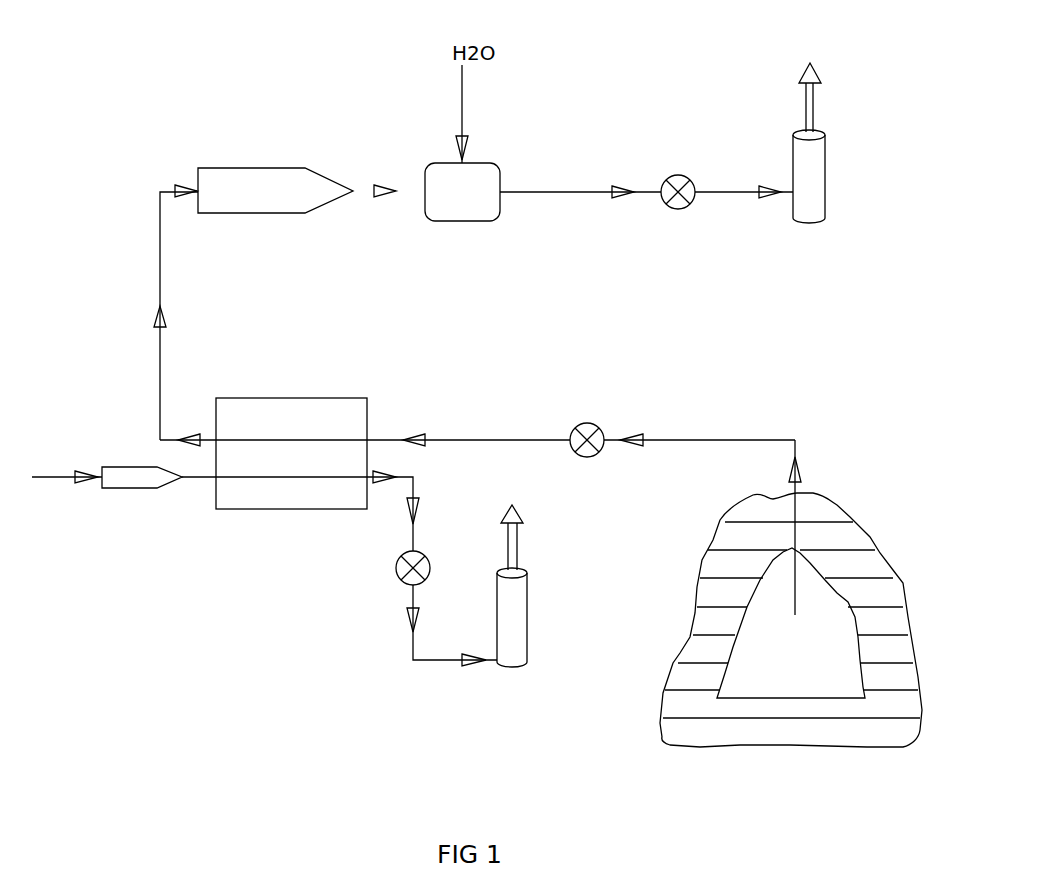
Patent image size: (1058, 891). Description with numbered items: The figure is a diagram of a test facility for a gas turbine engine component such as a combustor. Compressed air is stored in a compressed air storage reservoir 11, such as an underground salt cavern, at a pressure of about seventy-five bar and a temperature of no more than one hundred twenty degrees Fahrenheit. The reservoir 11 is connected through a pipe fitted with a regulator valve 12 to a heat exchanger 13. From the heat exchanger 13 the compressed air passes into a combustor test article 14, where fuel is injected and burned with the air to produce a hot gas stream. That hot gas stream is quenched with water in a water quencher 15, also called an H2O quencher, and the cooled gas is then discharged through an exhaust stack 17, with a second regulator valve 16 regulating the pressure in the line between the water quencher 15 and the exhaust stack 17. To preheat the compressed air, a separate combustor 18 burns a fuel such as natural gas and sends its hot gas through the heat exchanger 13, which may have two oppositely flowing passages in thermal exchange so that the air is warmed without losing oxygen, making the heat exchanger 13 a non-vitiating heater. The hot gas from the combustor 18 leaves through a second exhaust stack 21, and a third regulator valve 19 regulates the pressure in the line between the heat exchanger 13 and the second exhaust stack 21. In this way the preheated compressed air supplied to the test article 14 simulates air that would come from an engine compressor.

The compressed air storage reservoir 11 is at (815, 625).
The regulator valve 12 is at (590, 428).
The heat exchanger 13 is at (337, 405).
The combustor test article 14 is at (265, 190).
The water quencher 15 is at (450, 178).
The second regulator valve 16 is at (678, 178).
The exhaust stack 17 is at (813, 170).
The combustor 18 is at (131, 478).
The third regulator valve 19 is at (402, 566).
The second exhaust stack 21 is at (513, 597).